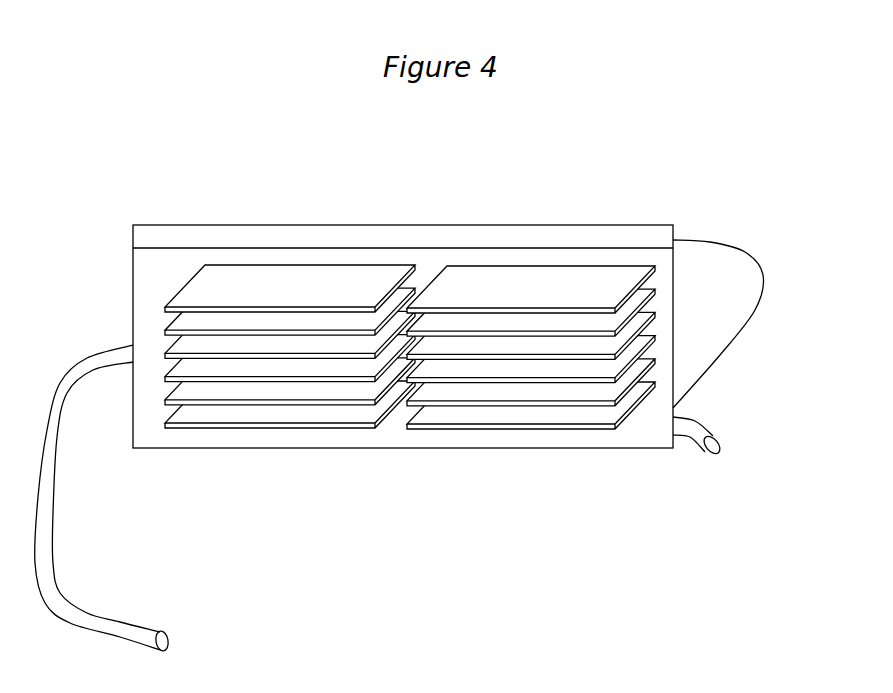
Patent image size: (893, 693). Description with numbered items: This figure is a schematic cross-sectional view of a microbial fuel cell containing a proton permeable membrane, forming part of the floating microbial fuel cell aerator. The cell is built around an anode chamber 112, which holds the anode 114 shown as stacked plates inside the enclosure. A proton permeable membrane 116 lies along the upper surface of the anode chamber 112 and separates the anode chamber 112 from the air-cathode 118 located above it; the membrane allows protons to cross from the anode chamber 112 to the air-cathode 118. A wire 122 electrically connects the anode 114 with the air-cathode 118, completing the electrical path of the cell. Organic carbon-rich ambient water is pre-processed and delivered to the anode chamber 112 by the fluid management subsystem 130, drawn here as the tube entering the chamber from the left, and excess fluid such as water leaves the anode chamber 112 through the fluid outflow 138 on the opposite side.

The anode chamber 112 is at (396, 347).
The anode 114 is at (410, 347).
The proton permeable membrane 116 is at (381, 336).
The air-cathode 118 is at (403, 223).
The wire 122 is at (740, 324).
The fluid management subsystem 130 is at (98, 498).
The fluid outflow 138 is at (720, 435).